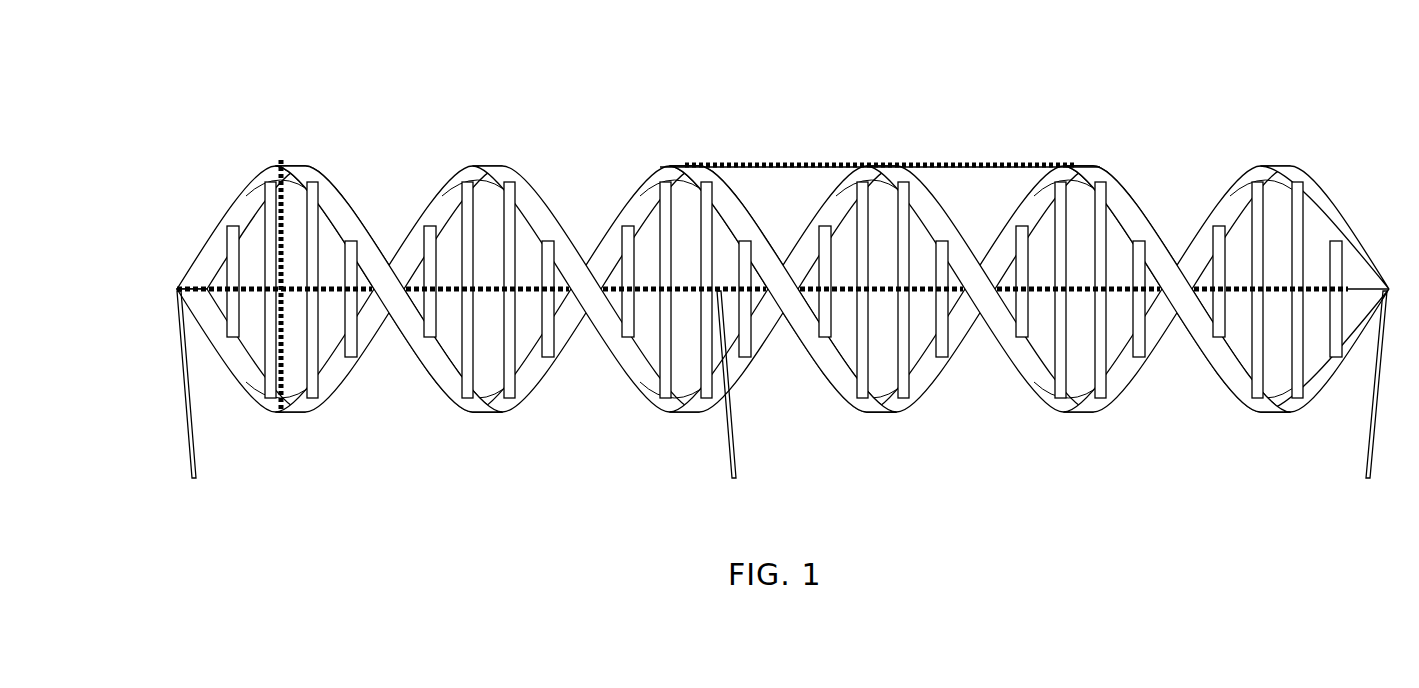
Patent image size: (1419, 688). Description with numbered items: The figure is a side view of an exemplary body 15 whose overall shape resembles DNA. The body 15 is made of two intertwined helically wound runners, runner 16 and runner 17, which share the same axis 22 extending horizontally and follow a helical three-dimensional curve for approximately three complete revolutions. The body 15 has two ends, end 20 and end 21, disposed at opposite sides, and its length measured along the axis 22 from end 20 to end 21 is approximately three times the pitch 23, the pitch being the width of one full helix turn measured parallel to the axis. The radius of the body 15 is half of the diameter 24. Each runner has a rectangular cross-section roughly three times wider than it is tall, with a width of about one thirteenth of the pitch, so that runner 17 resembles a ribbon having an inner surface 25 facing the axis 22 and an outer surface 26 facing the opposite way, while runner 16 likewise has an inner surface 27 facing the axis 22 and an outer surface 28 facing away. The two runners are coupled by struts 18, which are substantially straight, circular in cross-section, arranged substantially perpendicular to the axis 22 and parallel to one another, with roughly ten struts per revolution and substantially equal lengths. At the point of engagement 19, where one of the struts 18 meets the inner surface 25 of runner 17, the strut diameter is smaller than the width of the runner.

The body 15 is at (783, 313).
The runner 16 is at (783, 266).
The runner 17 is at (783, 264).
The struts 18 is at (900, 335).
The point of engagement 19 is at (1140, 362).
The end 20 is at (195, 396).
The end 21 is at (1367, 399).
The axis 22 is at (734, 398).
The pitch 23 is at (973, 158).
The diameter 24 is at (281, 155).
The inner surface 25 is at (445, 215).
The outer surface 26 is at (538, 210).
The inner surface 27 is at (645, 210).
The outer surface 28 is at (348, 213).